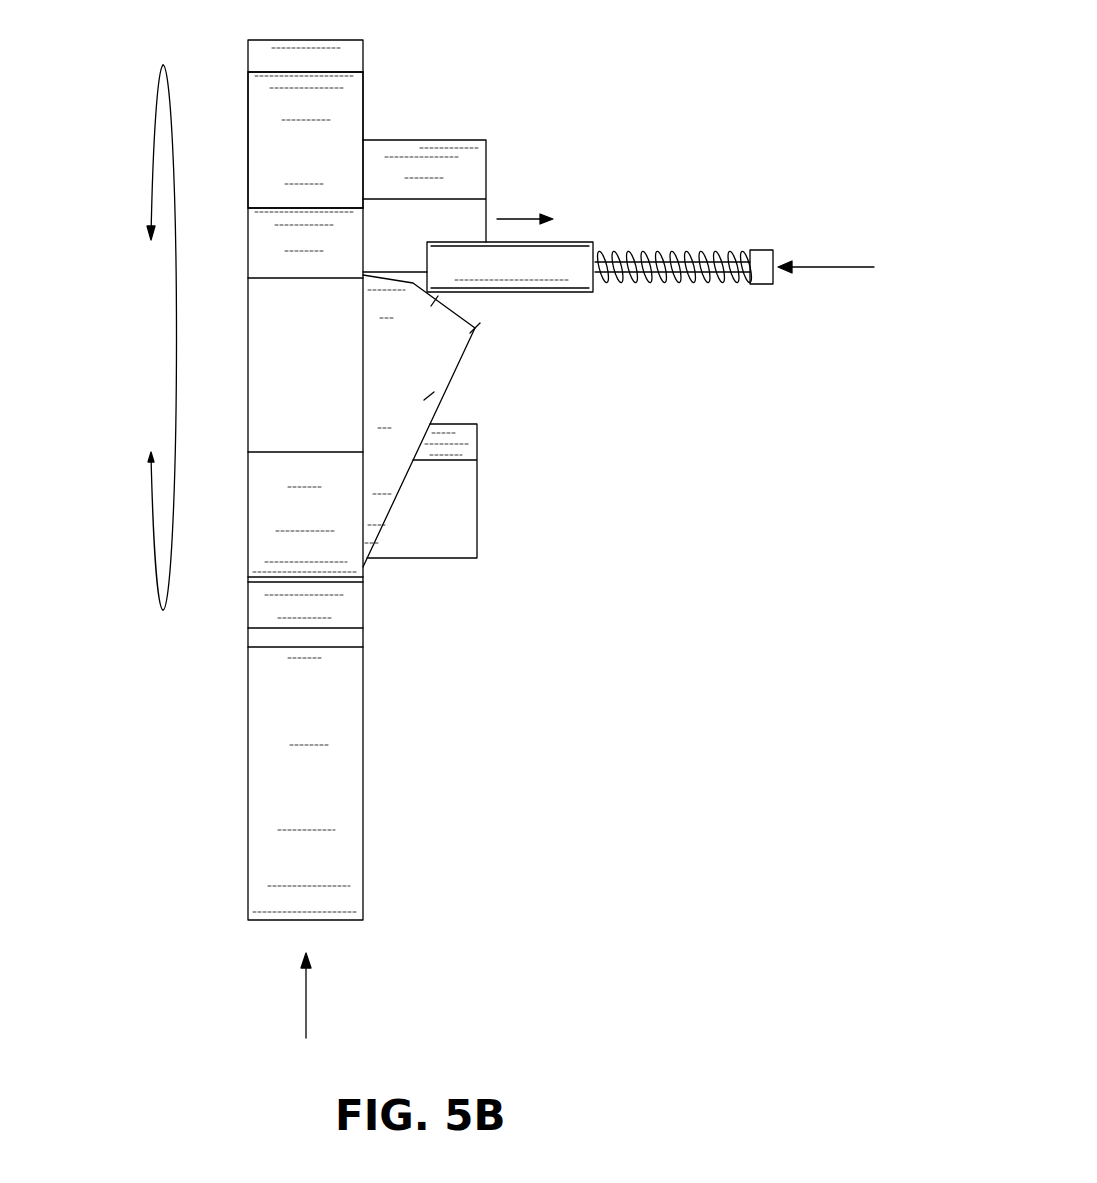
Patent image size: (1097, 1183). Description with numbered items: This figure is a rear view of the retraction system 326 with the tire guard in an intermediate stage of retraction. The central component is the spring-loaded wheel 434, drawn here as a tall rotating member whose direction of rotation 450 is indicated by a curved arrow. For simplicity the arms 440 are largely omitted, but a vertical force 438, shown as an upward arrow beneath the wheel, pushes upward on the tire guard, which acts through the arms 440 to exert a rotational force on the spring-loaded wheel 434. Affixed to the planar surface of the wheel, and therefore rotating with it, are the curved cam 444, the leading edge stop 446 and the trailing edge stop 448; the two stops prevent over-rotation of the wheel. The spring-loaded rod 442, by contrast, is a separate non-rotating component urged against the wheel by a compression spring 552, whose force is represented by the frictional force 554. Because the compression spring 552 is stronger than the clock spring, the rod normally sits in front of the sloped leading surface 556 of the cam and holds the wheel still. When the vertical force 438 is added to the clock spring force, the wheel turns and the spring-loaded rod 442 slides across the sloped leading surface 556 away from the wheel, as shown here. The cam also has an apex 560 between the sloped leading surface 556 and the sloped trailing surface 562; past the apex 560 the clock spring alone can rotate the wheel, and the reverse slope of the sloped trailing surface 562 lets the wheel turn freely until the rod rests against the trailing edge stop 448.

The retraction system 326 is at (462, 113).
The spring-loaded wheel 434 is at (277, 352).
The vertical force 438 is at (305, 1006).
The arms 440 is at (322, 110).
The spring-loaded rod 442 is at (578, 252).
The curved cam 444 is at (422, 355).
The leading edge stop 446 is at (470, 152).
The trailing edge stop 448 is at (435, 517).
The direction of rotation 450 is at (151, 138).
The compression spring 552 is at (708, 255).
The frictional force 554 is at (810, 267).
The sloped leading surface 556 is at (432, 304).
The apex 560 is at (475, 328).
The sloped trailing surface 562 is at (428, 394).